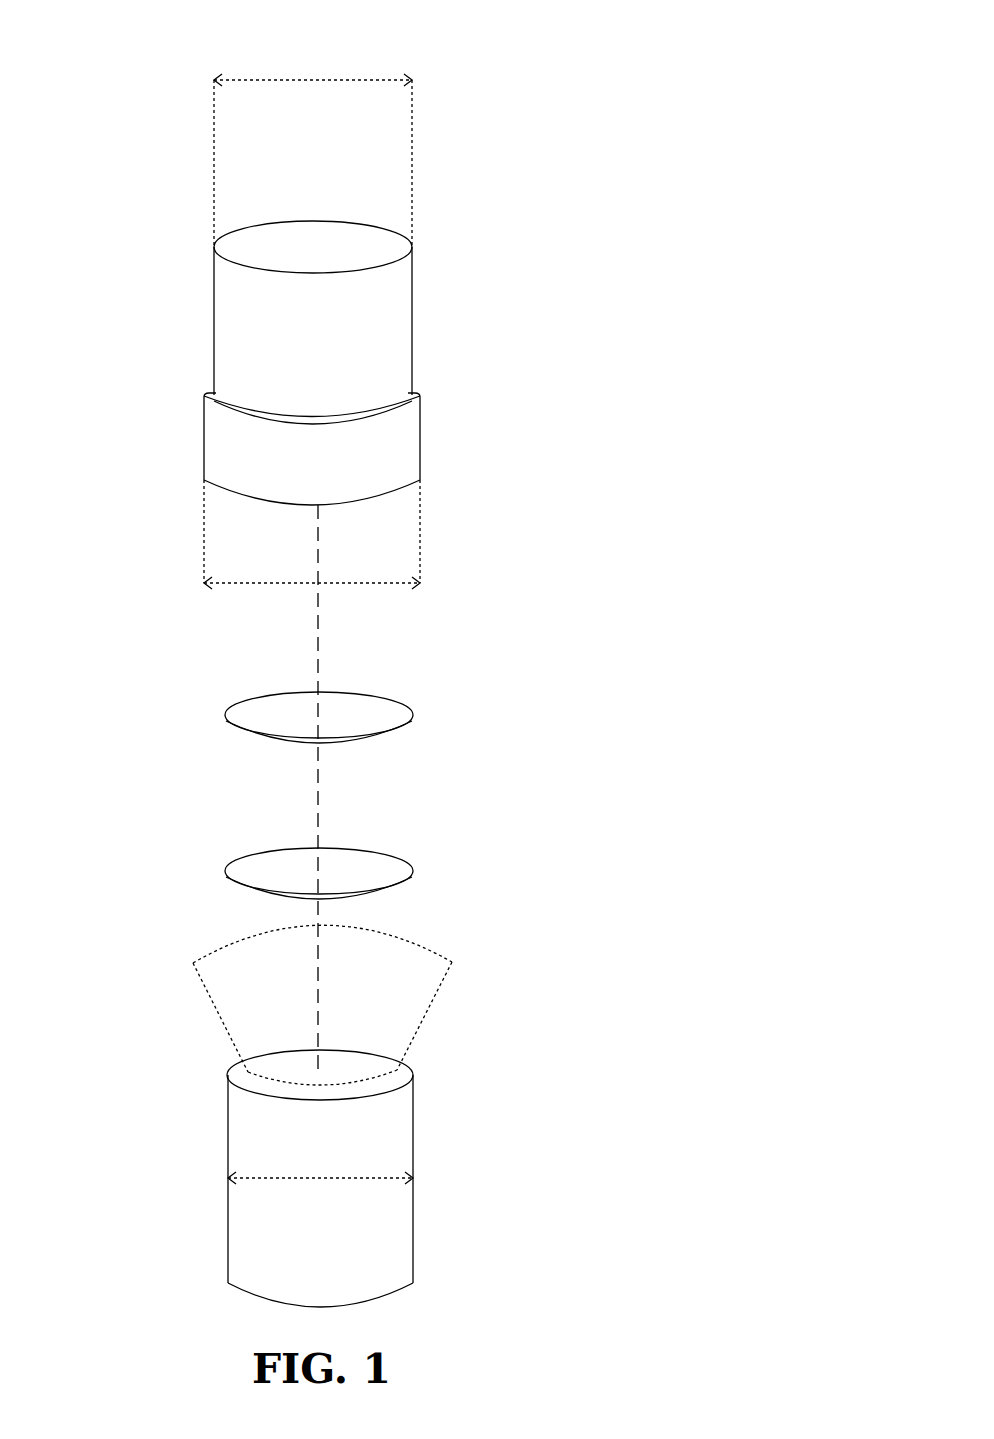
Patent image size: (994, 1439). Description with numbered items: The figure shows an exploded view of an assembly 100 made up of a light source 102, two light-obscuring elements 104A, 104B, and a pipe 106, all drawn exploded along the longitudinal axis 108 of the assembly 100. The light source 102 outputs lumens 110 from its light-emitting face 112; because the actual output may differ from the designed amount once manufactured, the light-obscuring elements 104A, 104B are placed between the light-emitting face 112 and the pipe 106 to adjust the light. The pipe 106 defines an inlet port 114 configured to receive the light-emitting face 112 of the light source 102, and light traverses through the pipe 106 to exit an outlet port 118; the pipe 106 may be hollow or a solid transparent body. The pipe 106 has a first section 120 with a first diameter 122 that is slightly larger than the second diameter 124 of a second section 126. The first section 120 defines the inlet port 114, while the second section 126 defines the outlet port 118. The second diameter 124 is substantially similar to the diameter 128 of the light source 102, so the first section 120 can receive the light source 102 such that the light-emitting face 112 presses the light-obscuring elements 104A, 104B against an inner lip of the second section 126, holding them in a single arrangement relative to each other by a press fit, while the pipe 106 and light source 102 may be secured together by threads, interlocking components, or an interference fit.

The assembly 100 is at (655, 40).
The light source 102 is at (240, 1110).
The light-obscuring element 104A is at (245, 872).
The light-obscuring element 104B is at (247, 713).
The pipe 106 is at (225, 318).
The longitudinal axis 108 is at (318, 788).
The lumens 110 is at (205, 987).
The light-emitting face 112 is at (400, 1066).
The inlet port 114 is at (370, 520).
The outlet port 118 is at (378, 205).
The first section 120 is at (465, 438).
The first diameter 122 is at (248, 588).
The second diameter 124 is at (240, 86).
The second section 126 is at (462, 294).
The diameter of light source 128 is at (275, 1180).